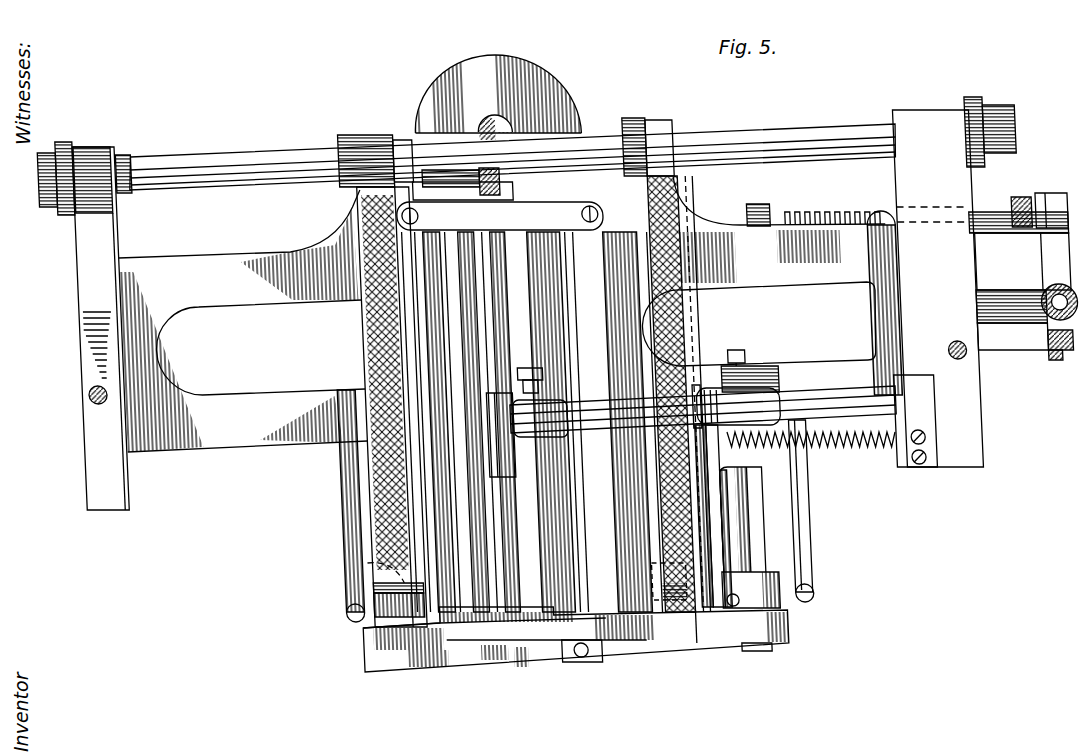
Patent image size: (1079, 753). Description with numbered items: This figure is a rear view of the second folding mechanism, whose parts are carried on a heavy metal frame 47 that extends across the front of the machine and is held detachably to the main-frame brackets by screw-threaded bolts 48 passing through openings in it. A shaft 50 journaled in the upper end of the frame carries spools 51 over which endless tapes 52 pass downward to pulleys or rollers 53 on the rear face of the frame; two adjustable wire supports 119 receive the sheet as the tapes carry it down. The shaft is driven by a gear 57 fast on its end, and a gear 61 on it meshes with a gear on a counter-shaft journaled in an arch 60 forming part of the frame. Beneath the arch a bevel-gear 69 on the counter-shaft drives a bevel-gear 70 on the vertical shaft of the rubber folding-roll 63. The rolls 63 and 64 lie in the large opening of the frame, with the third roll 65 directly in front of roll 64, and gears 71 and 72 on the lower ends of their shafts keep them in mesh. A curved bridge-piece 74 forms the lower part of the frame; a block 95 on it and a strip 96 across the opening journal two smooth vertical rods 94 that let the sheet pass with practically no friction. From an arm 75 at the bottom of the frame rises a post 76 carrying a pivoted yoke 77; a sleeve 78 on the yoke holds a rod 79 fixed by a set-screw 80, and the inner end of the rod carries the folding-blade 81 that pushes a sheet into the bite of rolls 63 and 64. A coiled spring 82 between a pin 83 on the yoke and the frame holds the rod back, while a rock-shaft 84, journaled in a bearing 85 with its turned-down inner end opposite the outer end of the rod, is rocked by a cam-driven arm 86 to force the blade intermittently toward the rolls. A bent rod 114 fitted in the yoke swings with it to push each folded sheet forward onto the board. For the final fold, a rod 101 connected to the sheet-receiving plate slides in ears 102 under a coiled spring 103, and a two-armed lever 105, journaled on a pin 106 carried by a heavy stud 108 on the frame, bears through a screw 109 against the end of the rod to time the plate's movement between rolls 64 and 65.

The heavy metal frame 47 is at (199, 262).
The screw-threaded bolts 48 is at (109, 393).
The shaft 50 is at (779, 135).
The spools 51 is at (366, 145).
The endless tapes 52 is at (373, 183).
The pulleys or rollers 53 is at (356, 568).
The gear 57 is at (76, 148).
The arch 60 is at (489, 70).
The gear 61 is at (988, 98).
The folding-roll 63 is at (456, 343).
The folding-roll 64 is at (566, 348).
The folding-roll 65 is at (556, 462).
The bevel-gear 69 is at (500, 122).
The bevel-gear 70 is at (468, 162).
The gear 71 is at (470, 616).
The gear 72 is at (576, 662).
The curved bridge-piece 74 is at (518, 640).
The arm 75 is at (683, 642).
The post 76 is at (758, 527).
The yoke 77 is at (716, 500).
The sleeve 78 is at (756, 395).
The rod 79 is at (818, 400).
The set-screw 80 is at (743, 350).
The folding-blade 81 is at (535, 305).
The coiled spring 82 is at (866, 448).
The pin 83 is at (730, 440).
The rock-shaft 84 is at (1062, 195).
The bearing 85 is at (990, 210).
The arm 86 is at (1035, 197).
The vertical rods 94 is at (469, 505).
The block 95 is at (485, 615).
The strip 96 is at (466, 215).
The rod 101 is at (811, 210).
The ears 102 is at (766, 212).
The coiled spring 103 is at (866, 210).
The two-armed lever or yoke 105 is at (1052, 262).
The pin 106 is at (1050, 302).
The heavy stud 108 is at (1027, 325).
The screw 109 is at (1056, 230).
The bent rod 114 is at (728, 607).
The supports 119 is at (342, 540).